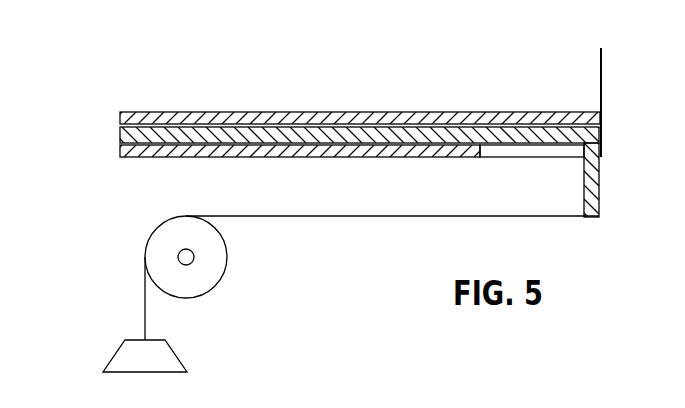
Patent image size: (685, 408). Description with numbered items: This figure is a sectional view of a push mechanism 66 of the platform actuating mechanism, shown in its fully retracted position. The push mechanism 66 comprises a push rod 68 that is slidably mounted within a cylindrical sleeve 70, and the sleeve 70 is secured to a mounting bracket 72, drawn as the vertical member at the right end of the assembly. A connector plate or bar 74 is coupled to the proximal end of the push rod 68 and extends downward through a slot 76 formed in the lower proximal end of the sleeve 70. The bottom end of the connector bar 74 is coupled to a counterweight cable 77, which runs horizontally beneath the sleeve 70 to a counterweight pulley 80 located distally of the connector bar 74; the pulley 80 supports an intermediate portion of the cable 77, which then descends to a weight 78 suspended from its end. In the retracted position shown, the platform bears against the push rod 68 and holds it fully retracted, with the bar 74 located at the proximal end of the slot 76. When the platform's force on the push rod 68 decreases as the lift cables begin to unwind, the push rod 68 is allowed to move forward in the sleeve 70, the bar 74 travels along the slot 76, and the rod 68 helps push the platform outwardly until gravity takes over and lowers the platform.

The push mechanism 66 is at (131, 76).
The push rod 68 is at (218, 132).
The cylindrical sleeve 70 is at (403, 112).
The mounting bracket 72 is at (602, 80).
The connector bar 74 is at (585, 177).
The slot 76 is at (512, 153).
The counterweight cable 77 is at (317, 217).
The weight 78 is at (168, 350).
The counterweight pulley 80 is at (210, 281).